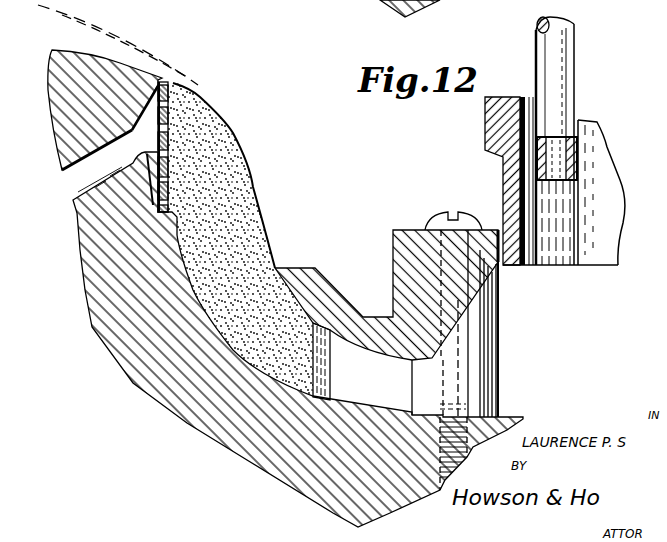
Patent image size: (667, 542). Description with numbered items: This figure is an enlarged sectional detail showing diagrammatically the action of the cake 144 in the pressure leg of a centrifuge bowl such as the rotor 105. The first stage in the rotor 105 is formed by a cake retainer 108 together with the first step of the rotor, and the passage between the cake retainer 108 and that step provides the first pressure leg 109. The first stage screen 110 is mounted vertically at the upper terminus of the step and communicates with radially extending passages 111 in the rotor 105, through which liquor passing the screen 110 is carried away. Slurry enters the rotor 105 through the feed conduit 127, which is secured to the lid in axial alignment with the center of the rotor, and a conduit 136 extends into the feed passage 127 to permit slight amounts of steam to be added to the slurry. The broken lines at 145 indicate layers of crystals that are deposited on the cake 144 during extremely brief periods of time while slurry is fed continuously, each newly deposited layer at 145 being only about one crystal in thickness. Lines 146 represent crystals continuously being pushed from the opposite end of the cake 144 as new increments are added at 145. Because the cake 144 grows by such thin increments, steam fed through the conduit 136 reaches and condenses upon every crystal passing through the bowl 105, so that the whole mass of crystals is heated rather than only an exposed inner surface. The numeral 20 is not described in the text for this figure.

The tape guide fragment 20 is at (380, 5).
The rotor 105 is at (263, 453).
The cake retainer 108 is at (412, 242).
The first pressure leg 109 is at (413, 351).
The first stage screen 110 is at (170, 115).
The radially extending passages 111 is at (88, 183).
The feed conduit 127 is at (600, 170).
The conduit 136 is at (570, 50).
The cake 144 is at (218, 148).
The layers of crystals 145 is at (322, 335).
The crystals 146 is at (163, 55).